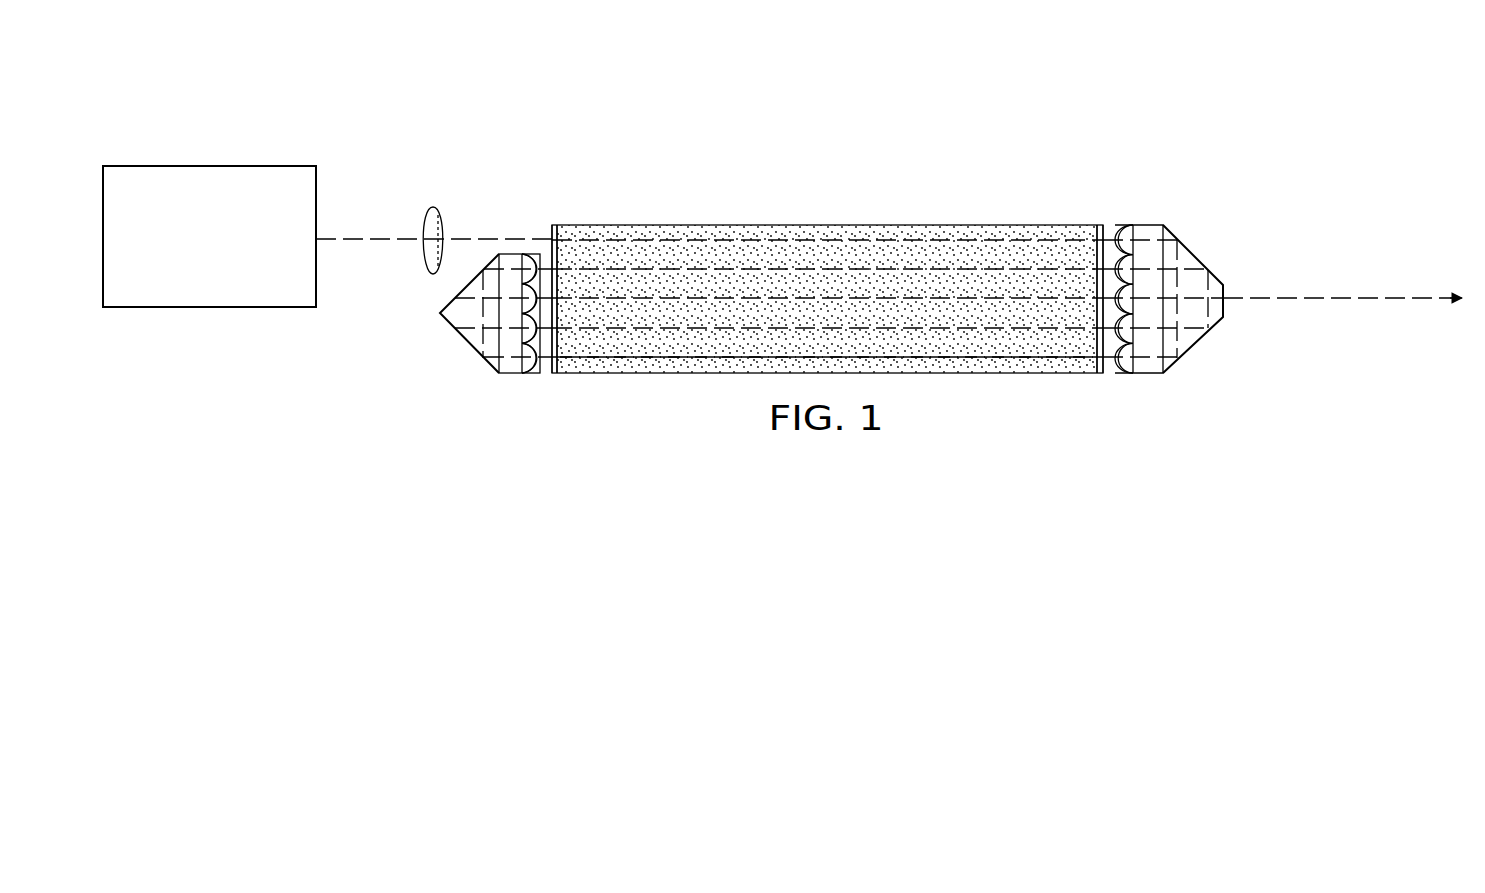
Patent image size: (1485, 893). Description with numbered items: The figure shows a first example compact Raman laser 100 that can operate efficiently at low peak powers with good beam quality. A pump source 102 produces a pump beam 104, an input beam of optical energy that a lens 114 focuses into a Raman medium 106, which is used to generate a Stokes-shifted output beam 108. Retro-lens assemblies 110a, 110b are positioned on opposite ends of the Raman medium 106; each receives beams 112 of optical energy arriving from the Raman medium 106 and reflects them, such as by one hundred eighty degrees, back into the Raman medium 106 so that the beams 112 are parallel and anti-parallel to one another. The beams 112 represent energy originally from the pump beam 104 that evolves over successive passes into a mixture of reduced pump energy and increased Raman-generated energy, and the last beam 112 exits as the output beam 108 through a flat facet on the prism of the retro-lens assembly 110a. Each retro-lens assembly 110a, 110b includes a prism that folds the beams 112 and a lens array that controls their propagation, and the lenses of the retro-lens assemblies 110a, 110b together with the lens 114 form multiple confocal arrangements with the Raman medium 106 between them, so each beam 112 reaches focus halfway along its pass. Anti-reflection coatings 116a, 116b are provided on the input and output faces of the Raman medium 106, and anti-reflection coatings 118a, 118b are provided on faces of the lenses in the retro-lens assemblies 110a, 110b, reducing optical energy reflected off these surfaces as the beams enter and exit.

The compact Raman laser 100 is at (927, 88).
The pump source 102 is at (210, 308).
The pump beam 104 is at (385, 240).
The Raman medium 106 is at (953, 224).
The Stokes-shifted output beam 108 is at (1300, 293).
The retro-lens assembly 110a is at (1158, 254).
The retro-lens assembly 110b is at (503, 359).
The beams 112 is at (972, 359).
The lens 114 is at (432, 206).
The anti-reflection coating 116a is at (550, 233).
The anti-reflection coating 116b is at (1104, 372).
The anti-reflection coating 118a is at (1111, 230).
The anti-reflection coating 118b is at (548, 375).